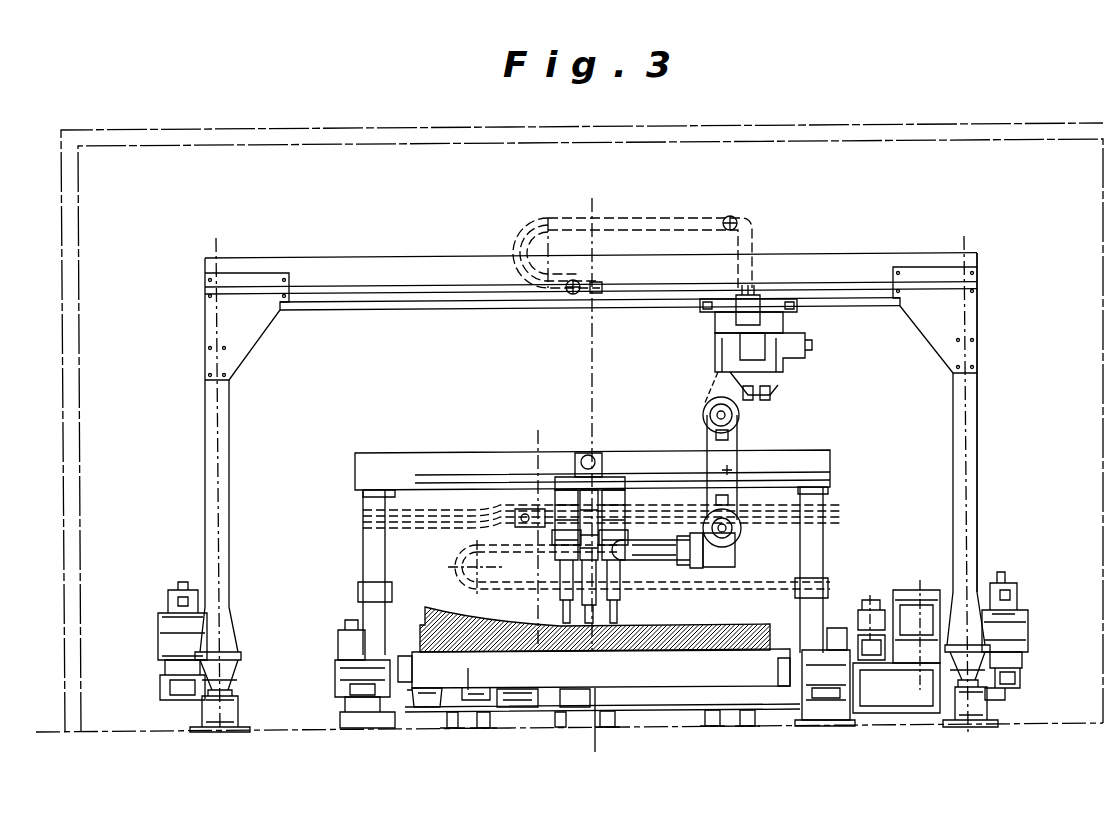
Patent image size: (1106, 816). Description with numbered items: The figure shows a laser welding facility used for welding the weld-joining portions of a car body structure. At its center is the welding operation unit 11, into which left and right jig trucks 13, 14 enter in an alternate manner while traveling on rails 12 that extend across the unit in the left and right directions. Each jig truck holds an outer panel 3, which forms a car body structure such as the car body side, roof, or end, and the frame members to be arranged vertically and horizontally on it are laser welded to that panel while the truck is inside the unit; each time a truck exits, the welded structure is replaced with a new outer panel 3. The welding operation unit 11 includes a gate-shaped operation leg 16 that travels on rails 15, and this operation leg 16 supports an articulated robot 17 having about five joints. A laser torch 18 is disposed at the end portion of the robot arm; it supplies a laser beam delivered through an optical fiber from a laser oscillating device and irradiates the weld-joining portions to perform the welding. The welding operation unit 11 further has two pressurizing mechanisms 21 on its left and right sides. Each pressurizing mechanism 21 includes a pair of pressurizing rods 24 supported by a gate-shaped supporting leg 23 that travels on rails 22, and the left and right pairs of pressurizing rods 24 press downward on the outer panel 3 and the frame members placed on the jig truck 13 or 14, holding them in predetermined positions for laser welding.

The welding operation unit 11 is at (903, 207).
The gate-shaped operation leg 16 is at (977, 325).
The articulated robot 17 is at (722, 362).
The pressurizing mechanism 21 is at (818, 446).
The gate-shaped supporting leg 23 is at (822, 505).
The pressurizing rod 24 is at (537, 567).
The outer panel 3 is at (765, 620).
The laser torch 18 is at (582, 623).
The rail 12 is at (428, 705).
The left jig truck 13 is at (859, 640).
The right jig truck 14 is at (896, 646).
The rail 22 is at (345, 697).
The rail 15 is at (236, 690).